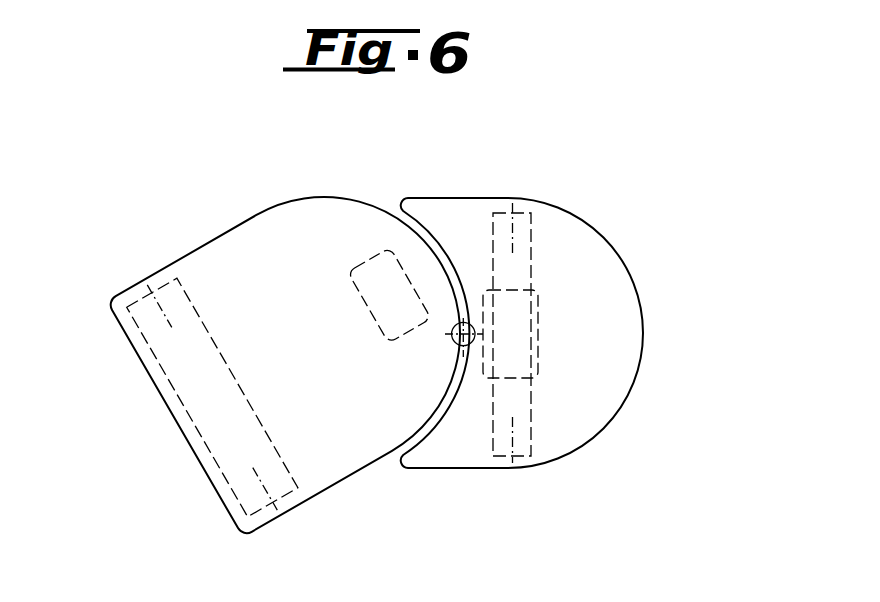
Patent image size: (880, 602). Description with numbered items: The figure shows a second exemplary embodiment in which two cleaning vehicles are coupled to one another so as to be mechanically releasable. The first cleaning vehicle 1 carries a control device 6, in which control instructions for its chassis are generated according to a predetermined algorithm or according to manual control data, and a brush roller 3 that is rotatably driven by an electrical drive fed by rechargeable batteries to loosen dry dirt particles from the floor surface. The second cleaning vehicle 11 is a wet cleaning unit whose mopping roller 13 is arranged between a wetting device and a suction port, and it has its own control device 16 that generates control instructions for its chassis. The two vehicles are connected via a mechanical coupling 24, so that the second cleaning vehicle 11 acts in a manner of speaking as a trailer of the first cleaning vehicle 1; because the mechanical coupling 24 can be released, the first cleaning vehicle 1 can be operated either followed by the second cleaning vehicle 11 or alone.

The first cleaning vehicle 1 is at (175, 233).
The brush roller 3 is at (180, 373).
The control device 6 is at (368, 277).
The second cleaning vehicle 11 is at (580, 186).
The mopping roller 13 is at (520, 400).
The control device 16 is at (522, 303).
The mechanical coupling 24 is at (489, 346).